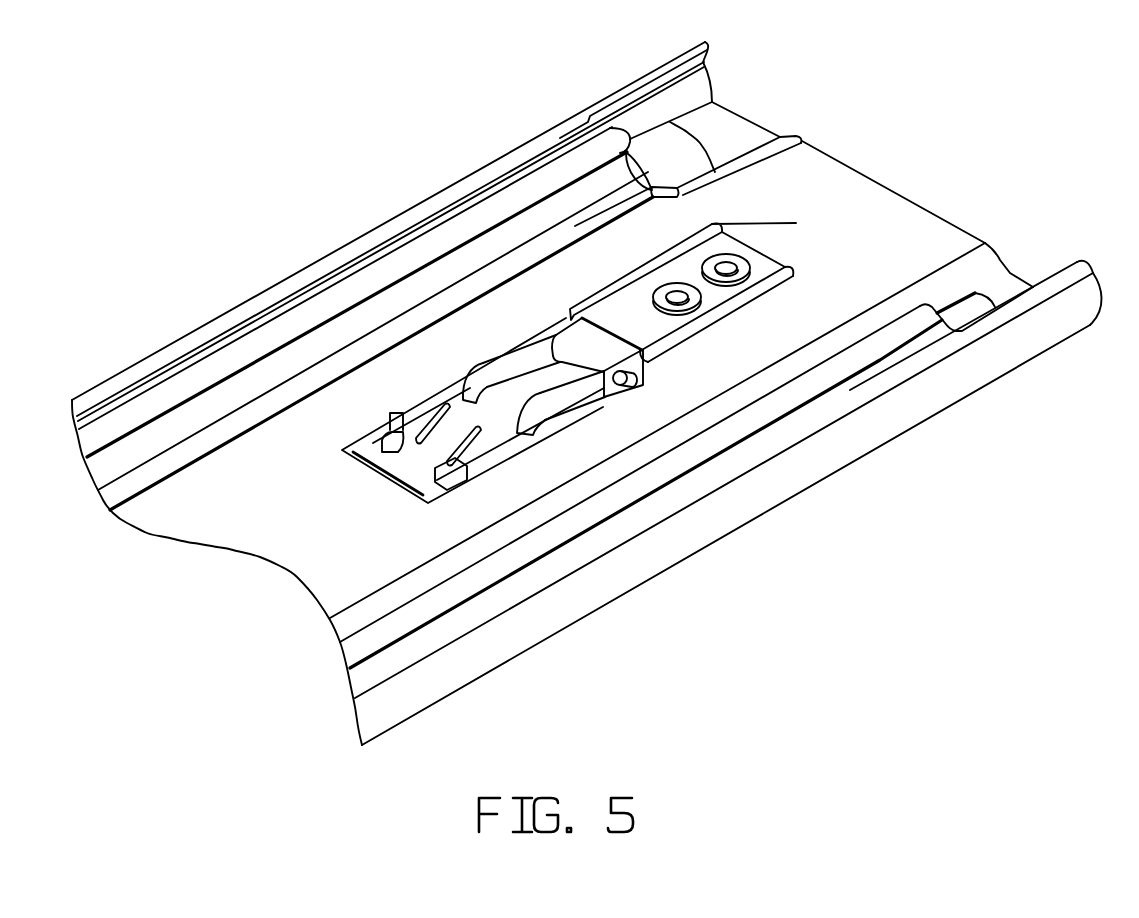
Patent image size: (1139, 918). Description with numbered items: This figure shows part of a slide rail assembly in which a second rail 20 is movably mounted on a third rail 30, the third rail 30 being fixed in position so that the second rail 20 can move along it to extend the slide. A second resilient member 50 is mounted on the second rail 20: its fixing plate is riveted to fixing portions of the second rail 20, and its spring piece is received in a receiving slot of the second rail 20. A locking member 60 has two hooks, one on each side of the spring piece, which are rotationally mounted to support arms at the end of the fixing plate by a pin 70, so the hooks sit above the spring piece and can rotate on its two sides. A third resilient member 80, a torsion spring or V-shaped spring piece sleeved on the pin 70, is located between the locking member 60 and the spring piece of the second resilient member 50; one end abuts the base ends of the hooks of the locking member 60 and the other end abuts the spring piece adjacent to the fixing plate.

The second rail 20 is at (320, 407).
The third rail 30 is at (865, 218).
The second resilient member 50 is at (688, 268).
The locking member 60 is at (572, 397).
The pin 70 is at (633, 387).
The third resilient member 80 is at (563, 352).